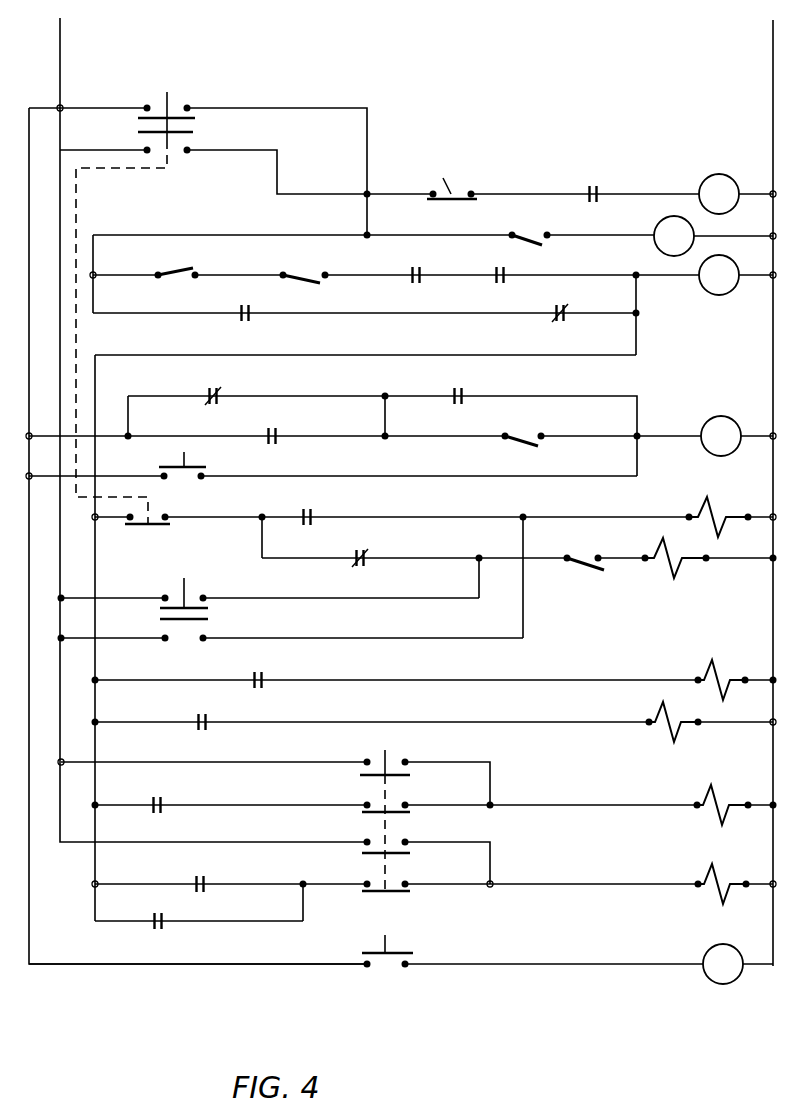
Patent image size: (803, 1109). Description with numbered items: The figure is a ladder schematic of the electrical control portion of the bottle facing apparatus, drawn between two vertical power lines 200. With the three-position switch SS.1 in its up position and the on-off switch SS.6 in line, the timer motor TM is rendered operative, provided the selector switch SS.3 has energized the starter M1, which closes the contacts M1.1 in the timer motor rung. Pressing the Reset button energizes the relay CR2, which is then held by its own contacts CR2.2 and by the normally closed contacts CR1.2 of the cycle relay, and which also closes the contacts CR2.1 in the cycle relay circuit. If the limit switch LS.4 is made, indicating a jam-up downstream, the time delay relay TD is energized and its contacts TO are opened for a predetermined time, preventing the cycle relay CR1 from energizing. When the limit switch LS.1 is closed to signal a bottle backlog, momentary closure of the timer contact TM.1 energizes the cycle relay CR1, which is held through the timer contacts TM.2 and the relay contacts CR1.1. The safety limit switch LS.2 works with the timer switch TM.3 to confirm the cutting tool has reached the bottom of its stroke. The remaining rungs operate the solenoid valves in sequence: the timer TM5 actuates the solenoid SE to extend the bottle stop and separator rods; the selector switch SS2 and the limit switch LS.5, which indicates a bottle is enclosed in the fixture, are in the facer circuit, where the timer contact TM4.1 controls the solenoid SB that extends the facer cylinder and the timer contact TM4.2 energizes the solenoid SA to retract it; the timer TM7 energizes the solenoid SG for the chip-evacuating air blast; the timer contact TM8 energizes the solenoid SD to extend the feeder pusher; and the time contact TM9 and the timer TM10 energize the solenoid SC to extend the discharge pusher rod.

The power lines 200 is at (60, 55).
The 3-position switch SS.1 is at (145, 301).
The on-off switch SS.6 is at (454, 175).
The starter contacts M1.1 is at (606, 183).
The timer motor TM is at (719, 194).
The limit switch LS.4 is at (530, 228).
The time delay relay TD is at (674, 236).
The time delay relay contacts TO is at (177, 264).
The limit switch LS.1 is at (304, 266).
The relay contacts CR2.1 is at (411, 266).
The timer contact TM.1 is at (494, 265).
The cycle relay CR1 is at (719, 275).
The relay contacts CR1.1 is at (249, 303).
The timer contacts TM.2 is at (574, 304).
The normally closed relay contacts CR1.2 is at (224, 386).
The timer switch TM.3 is at (281, 425).
The relay contacts CR2.2 is at (472, 386).
The limit switch LS.2 is at (525, 428).
The relay CR2 is at (721, 436).
The re-set button Reset is at (198, 464).
The timer contact TM4.2 is at (336, 508).
The solenoid SA is at (719, 513).
The timer contact TM4.1 is at (390, 550).
The limit switch LS.5 is at (584, 551).
The solenoid SB is at (676, 557).
The selector switch SS2 is at (196, 608).
The timer TM5 is at (284, 672).
The solenoid SE is at (723, 676).
The timer TM7 is at (229, 715).
The solenoid SG is at (656, 721).
The timer contact TM8 is at (182, 797).
The solenoid SD is at (709, 800).
The time contact TM9 is at (227, 877).
The solenoid SC is at (709, 878).
The timer TM10 is at (189, 917).
The selector switch SS.3 is at (400, 950).
The starter M1 is at (723, 964).